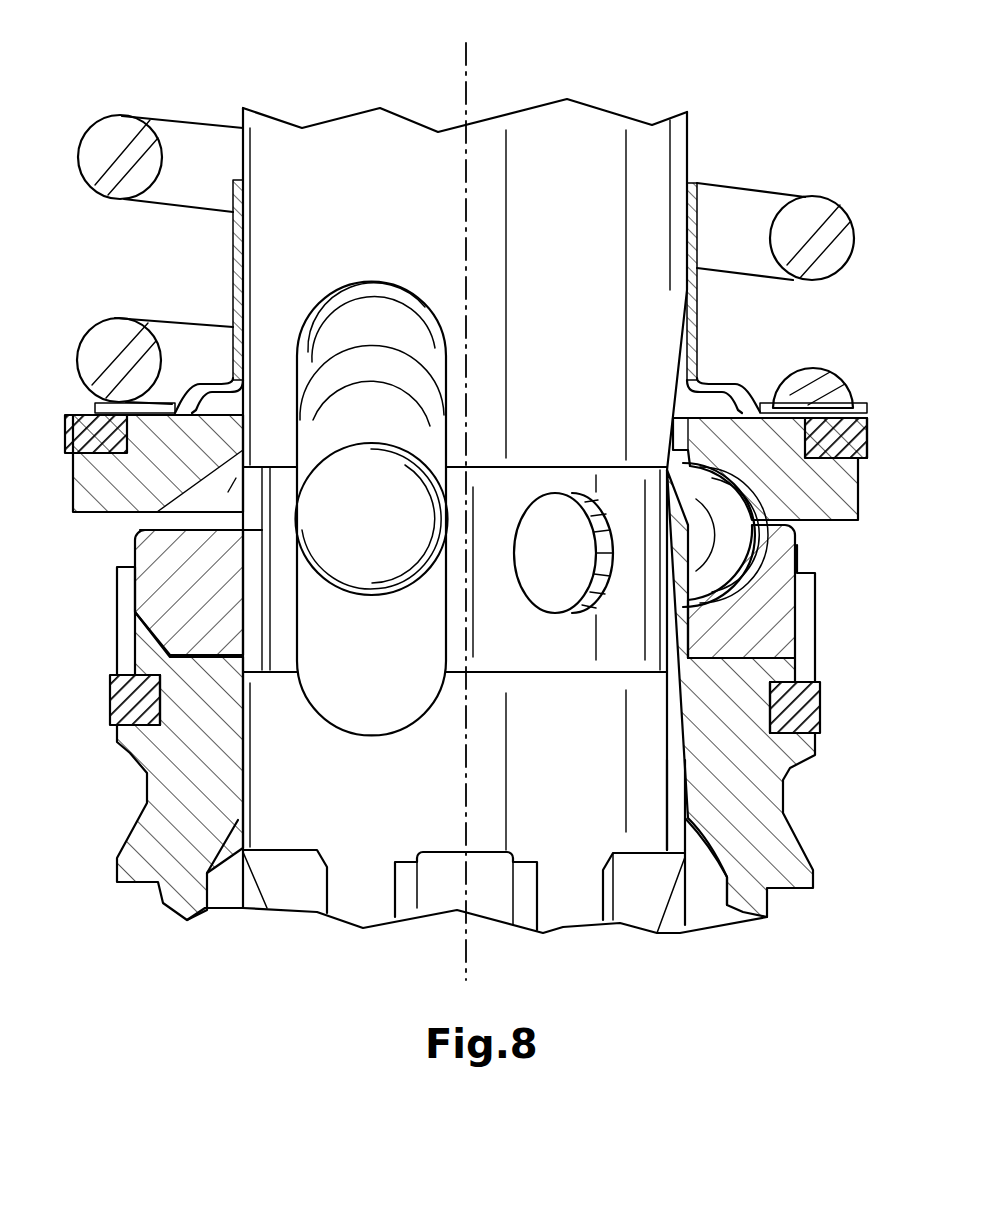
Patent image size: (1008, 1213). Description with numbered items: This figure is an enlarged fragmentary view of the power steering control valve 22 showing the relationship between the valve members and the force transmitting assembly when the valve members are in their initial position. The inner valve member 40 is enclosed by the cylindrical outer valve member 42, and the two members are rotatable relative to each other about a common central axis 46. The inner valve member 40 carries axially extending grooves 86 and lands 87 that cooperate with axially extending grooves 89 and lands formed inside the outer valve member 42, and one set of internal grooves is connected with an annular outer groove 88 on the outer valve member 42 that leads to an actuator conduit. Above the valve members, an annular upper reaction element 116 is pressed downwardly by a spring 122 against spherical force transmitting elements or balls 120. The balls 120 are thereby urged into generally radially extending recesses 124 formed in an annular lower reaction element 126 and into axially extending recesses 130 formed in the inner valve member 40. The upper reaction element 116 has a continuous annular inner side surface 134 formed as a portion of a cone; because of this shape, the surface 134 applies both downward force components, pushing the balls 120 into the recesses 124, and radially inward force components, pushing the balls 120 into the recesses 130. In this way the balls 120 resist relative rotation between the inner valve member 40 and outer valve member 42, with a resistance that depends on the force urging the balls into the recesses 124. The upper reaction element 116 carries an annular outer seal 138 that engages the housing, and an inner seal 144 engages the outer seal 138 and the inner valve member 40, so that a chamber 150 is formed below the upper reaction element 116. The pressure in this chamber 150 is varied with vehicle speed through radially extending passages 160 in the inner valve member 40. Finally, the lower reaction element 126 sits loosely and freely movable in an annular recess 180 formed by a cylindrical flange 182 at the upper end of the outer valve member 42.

The power steering control valve 22 is at (833, 843).
The inner valve member 40 is at (620, 106).
The outer valve member 42 is at (108, 878).
The central axis 46 is at (462, 88).
The axially extending grooves 86 is at (290, 885).
The lands 87 is at (358, 895).
The annular outer groove 88 is at (137, 788).
The axially extending grooves 89 is at (227, 892).
The upper reaction element 116 is at (850, 524).
The force transmitting elements 120 is at (353, 527).
The spring 122 is at (827, 233).
The recesses 124 is at (760, 545).
The lower reaction element 126 is at (124, 558).
The recesses 130 is at (388, 322).
The inner side surface 134 is at (767, 520).
The outer seal 138 is at (847, 436).
The inner seal 144 is at (695, 313).
The chamber 150 is at (173, 520).
The radially extending passages 160 is at (552, 550).
The annular recess 180 is at (150, 642).
The cylindrical flange 182 is at (127, 597).